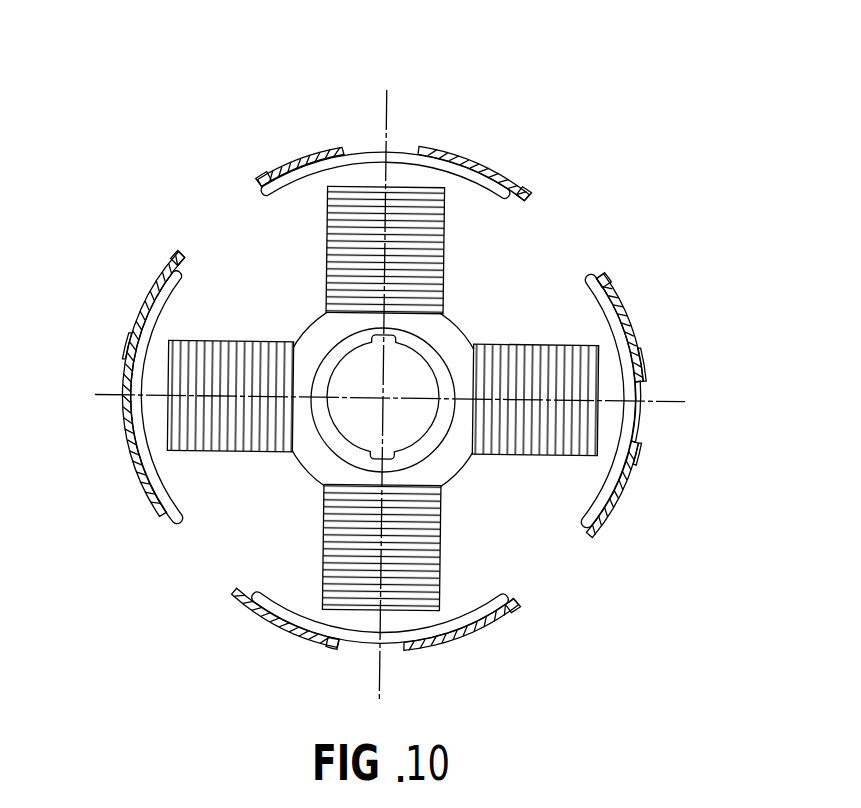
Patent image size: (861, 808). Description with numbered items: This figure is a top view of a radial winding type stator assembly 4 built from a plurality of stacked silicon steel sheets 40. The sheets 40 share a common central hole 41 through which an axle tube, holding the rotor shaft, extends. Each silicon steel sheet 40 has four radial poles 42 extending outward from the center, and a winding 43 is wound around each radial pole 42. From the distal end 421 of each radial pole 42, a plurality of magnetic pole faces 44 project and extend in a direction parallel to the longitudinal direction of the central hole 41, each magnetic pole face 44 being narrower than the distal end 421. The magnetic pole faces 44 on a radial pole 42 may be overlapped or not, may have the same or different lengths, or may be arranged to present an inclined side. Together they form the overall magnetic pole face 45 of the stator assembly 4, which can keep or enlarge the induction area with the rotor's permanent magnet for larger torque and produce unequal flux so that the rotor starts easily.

The stator assembly 4 is at (548, 303).
The silicon steel sheet 40 is at (445, 340).
The central hole 41 is at (350, 375).
The radial pole 42 is at (342, 180).
The distal end 421 is at (265, 182).
The winding 43 is at (430, 250).
The magnetic pole face 44 is at (302, 168).
The overall magnetic pole face 45 is at (350, 128).